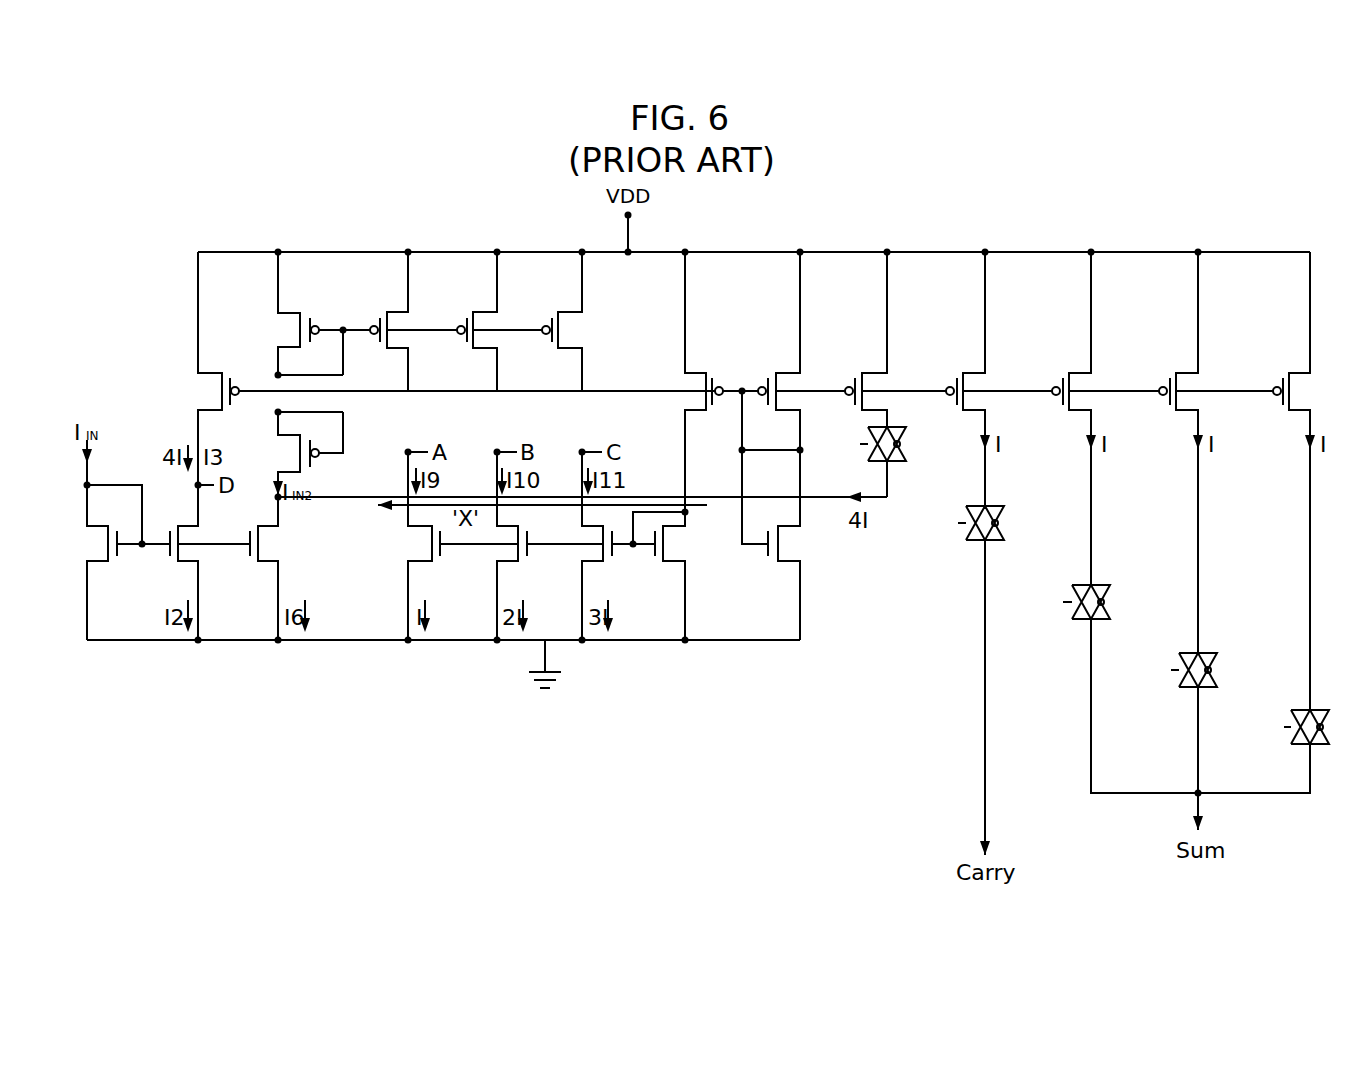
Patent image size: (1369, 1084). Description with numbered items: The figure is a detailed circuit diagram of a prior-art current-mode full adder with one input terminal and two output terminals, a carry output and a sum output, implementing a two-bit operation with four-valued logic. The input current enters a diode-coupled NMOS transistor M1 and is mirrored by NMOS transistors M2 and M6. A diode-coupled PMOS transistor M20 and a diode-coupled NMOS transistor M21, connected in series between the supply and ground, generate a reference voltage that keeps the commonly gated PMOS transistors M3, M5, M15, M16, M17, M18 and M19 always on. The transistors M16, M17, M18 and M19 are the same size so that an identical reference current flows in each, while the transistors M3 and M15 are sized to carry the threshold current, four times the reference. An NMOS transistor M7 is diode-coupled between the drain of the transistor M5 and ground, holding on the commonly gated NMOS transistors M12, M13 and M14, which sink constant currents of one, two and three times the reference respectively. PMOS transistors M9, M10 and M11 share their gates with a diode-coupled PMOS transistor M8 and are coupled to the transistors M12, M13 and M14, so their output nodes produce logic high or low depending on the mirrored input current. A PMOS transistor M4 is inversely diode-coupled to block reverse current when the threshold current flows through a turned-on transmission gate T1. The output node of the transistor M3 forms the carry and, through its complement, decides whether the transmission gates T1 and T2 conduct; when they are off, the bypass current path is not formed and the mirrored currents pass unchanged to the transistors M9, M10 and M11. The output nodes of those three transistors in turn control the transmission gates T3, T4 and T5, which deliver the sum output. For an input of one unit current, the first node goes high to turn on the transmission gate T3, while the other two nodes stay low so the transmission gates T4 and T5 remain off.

The diode-coupled NMOS transistor M1 is at (101, 562).
The NMOS transistor M2 is at (196, 562).
The PMOS transistor M3 is at (436, 368).
The PMOS transistor M4 is at (294, 454).
The PMOS transistor M5 is at (721, 382).
The NMOS transistor M6 is at (282, 568).
The NMOS transistor M7 is at (677, 576).
The diode-coupled PMOS transistor M8 is at (294, 313).
The PMOS transistor M9 is at (393, 321).
The PMOS transistor M10 is at (465, 321).
The PMOS transistor M11 is at (553, 321).
The NMOS transistor M12 is at (438, 546).
The NMOS transistor M13 is at (550, 546).
The NMOS transistor M14 is at (618, 546).
The PMOS transistor M15 is at (892, 339).
The PMOS transistor M16 is at (995, 379).
The PMOS transistor M17 is at (1101, 418).
The PMOS transistor M18 is at (1212, 452).
The PMOS transistor M19 is at (1316, 481).
The PMOS transistor M20 is at (799, 351).
The NMOS transistor M21 is at (795, 515).
The transmission gate T1 is at (887, 444).
The transmission gate T2 is at (986, 680).
The transmission gate T3 is at (1178, 689).
The transmission gate T4 is at (1200, 741).
The transmission gate T5 is at (1313, 727).